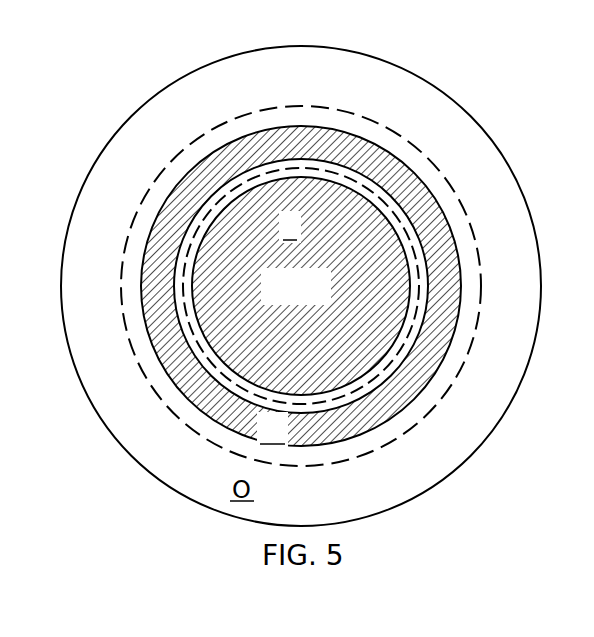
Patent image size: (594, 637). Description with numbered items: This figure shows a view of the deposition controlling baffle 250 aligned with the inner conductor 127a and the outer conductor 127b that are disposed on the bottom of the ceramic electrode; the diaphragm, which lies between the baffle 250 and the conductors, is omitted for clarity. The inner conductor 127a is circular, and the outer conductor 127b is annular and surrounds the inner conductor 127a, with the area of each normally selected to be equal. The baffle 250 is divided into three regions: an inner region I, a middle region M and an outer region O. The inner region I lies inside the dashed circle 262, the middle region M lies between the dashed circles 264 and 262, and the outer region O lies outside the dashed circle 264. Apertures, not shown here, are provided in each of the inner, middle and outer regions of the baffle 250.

The deposition controlling baffle 250 is at (478, 122).
The dashed circle 264 is at (481, 286).
The outer conductor 127b is at (298, 126).
The dashed circle 262 is at (298, 166).
The inner conductor 127a is at (328, 300).